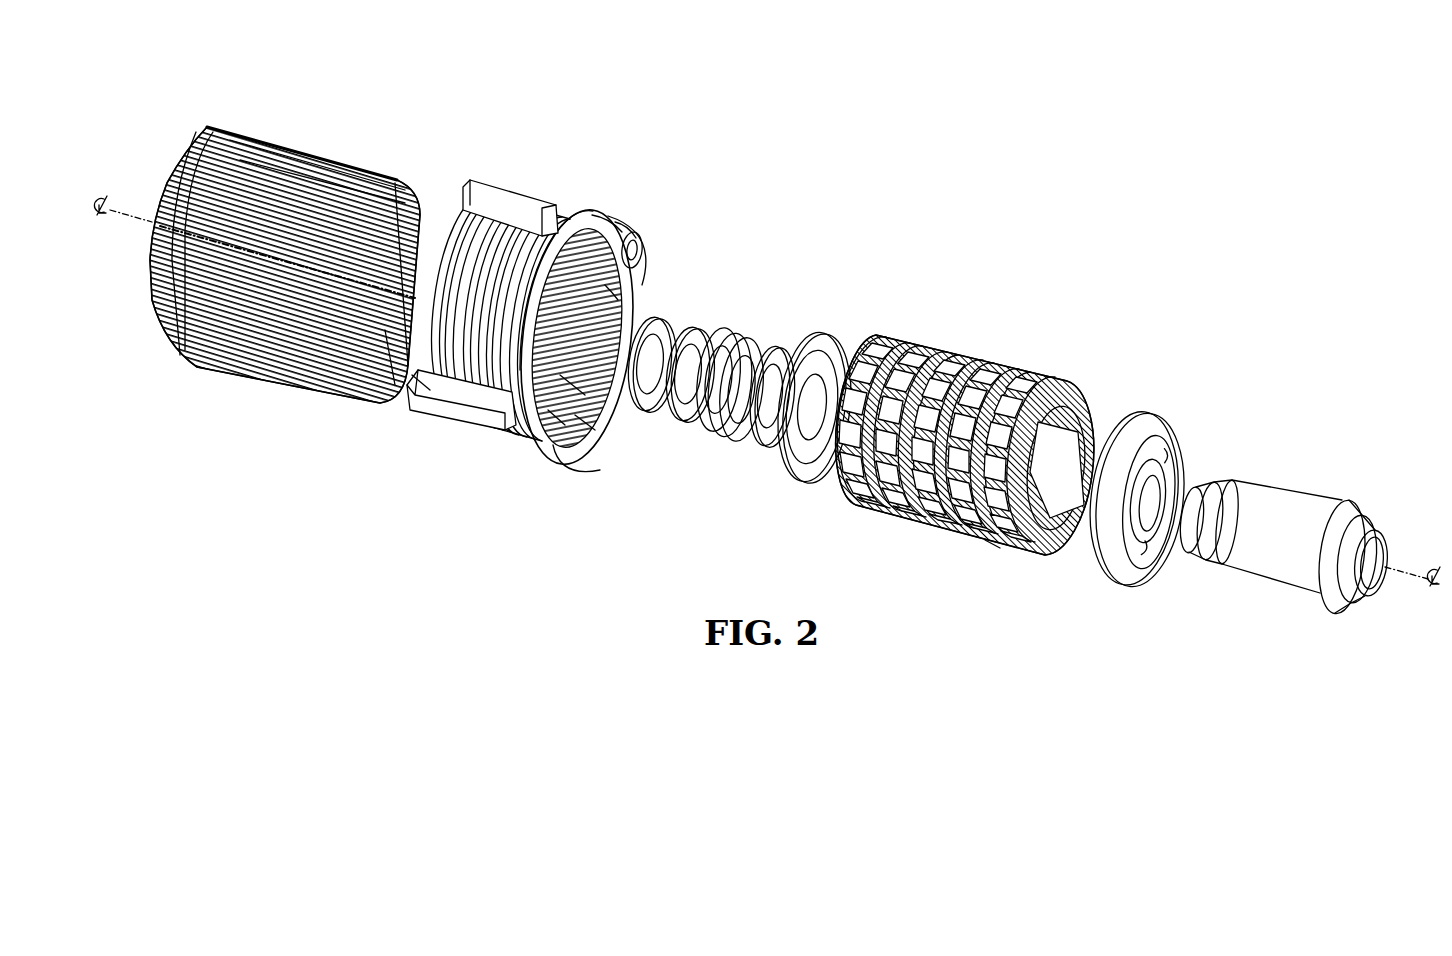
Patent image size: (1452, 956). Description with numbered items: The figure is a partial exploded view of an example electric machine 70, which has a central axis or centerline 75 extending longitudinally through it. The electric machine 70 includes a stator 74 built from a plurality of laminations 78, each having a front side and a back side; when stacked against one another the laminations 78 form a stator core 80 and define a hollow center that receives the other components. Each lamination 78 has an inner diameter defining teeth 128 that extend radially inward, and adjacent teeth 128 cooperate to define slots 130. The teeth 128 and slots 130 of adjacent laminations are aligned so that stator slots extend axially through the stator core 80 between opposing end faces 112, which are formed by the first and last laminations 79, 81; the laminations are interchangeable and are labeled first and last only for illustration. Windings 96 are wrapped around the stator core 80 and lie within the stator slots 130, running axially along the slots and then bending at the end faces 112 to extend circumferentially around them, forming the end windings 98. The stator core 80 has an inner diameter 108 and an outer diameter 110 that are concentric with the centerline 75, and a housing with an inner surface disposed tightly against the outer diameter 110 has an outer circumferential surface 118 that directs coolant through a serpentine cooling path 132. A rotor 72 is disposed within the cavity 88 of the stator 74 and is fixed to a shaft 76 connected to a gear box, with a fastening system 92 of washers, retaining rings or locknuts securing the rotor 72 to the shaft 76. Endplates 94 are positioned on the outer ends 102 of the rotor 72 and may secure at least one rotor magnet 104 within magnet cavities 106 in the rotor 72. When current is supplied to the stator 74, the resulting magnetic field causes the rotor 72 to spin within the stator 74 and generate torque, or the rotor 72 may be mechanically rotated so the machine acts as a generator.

The electric machine 70 is at (871, 149).
The rotor 72 is at (999, 441).
The stator 74 is at (555, 381).
The central axis or centerline 75 is at (153, 218).
The shaft 76 is at (1283, 497).
The laminations 78 is at (497, 463).
The first lamination 79 is at (613, 292).
The stator core 80 is at (519, 523).
The last lamination 81 is at (418, 373).
The cavity 88 is at (586, 304).
The fastening system 92 is at (645, 330).
The endplates 94 is at (807, 487).
The windings 96 is at (285, 259).
The end windings 98 is at (230, 127).
The outer ends 102 is at (878, 338).
The rotor magnet 104 is at (1067, 393).
The magnet cavities 106 is at (993, 543).
The inner diameter 108 is at (557, 413).
The outer diameter 110 is at (623, 213).
The end faces 112 is at (459, 216).
The outer circumferential surface 118 is at (510, 233).
The teeth 128 is at (572, 380).
The slots 130 is at (587, 423).
The serpentine cooling path 132 is at (582, 207).